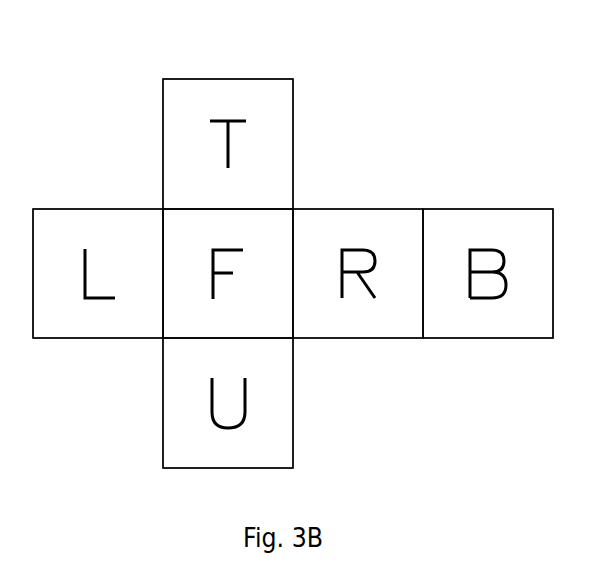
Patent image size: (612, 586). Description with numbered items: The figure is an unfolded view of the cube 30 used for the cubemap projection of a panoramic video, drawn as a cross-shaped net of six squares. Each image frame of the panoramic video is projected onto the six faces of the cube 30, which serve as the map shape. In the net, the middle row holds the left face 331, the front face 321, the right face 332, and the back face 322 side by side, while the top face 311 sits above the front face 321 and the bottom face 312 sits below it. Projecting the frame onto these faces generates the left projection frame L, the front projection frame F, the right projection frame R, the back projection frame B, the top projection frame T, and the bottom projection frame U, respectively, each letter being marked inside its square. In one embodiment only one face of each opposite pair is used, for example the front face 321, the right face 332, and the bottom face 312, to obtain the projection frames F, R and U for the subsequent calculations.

The cube 30 is at (488, 59).
The top face 311 is at (183, 127).
The bottom face 312 is at (183, 445).
The front face 321 is at (188, 330).
The back face 322 is at (455, 226).
The left face 331 is at (66, 216).
The right face 332 is at (326, 228).